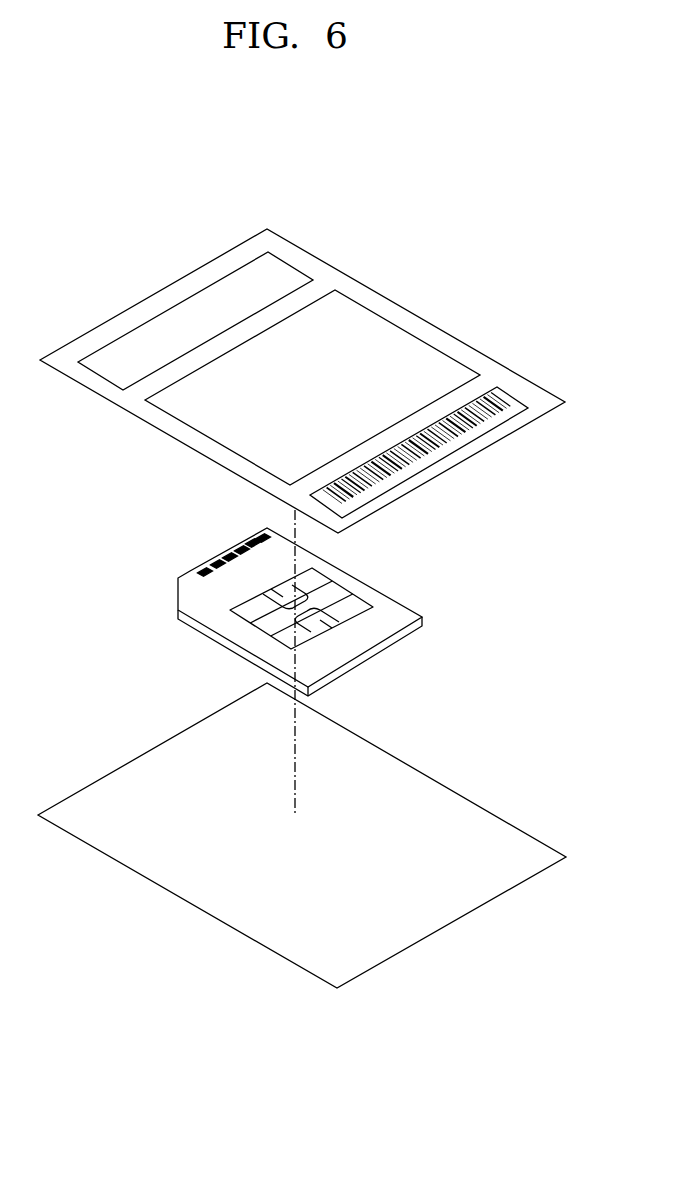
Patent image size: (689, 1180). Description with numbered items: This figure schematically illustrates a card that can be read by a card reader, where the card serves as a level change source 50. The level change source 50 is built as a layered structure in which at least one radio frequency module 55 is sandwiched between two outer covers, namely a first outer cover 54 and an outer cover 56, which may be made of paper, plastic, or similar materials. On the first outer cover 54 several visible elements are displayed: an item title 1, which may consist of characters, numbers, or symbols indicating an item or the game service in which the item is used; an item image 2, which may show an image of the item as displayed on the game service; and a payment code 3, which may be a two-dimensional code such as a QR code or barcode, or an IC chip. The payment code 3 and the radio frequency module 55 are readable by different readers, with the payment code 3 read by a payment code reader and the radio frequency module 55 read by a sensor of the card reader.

The level change source 50 is at (500, 199).
The first outer cover 54 is at (362, 285).
The item title 1 is at (287, 265).
The item image 2 is at (407, 332).
The payment code 3 is at (517, 395).
The radio frequency module 55 is at (385, 592).
The outer cover 56 is at (418, 771).